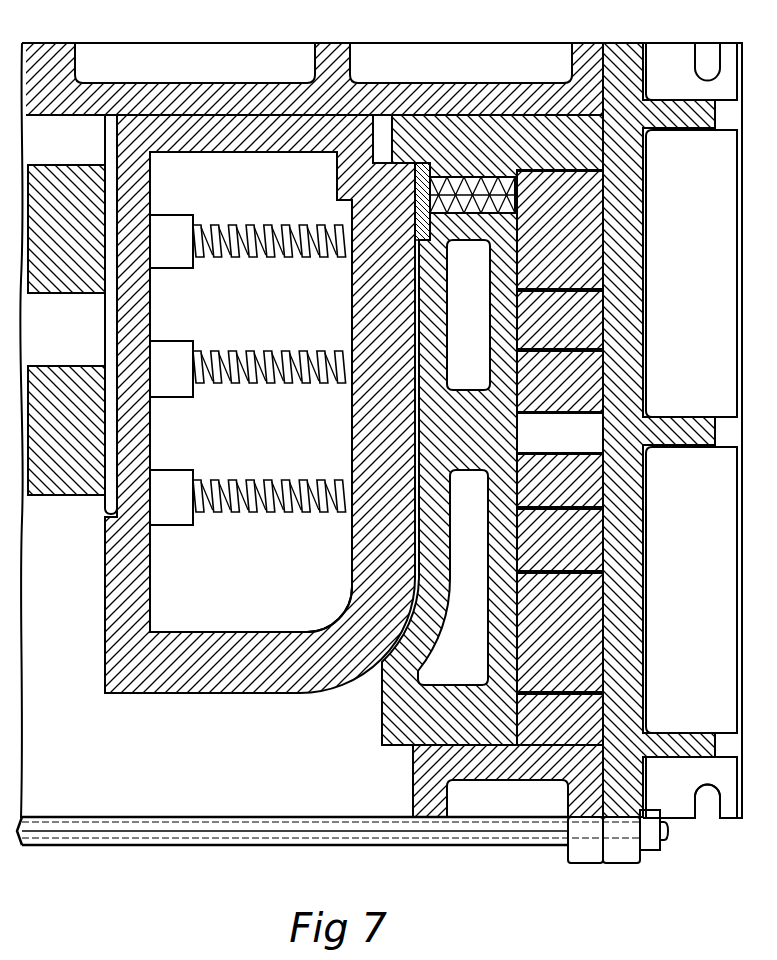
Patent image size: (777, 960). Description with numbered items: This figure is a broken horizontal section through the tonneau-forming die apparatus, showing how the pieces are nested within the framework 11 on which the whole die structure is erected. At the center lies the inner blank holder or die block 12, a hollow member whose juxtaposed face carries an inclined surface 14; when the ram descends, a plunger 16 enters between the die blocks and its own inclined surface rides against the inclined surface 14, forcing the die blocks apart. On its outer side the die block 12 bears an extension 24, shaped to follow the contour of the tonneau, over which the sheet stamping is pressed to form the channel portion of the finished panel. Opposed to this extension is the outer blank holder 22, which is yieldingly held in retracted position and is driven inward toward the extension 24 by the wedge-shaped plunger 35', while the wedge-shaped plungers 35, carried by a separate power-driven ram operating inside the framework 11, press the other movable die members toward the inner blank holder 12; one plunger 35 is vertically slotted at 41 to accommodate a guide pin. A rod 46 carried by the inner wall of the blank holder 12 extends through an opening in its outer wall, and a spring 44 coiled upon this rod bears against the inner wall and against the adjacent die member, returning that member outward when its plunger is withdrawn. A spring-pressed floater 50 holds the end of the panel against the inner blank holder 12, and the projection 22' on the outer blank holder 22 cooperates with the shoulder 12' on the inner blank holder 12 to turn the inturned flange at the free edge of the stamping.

The framework 11 is at (410, 100).
The die block 12 is at (260, 433).
The shoulder 12' is at (354, 153).
The inclined surface 14 is at (110, 435).
The plunger 16 is at (67, 192).
The outer blank holder 22 is at (467, 466).
The projection 22' is at (334, 84).
The extension 24 is at (400, 540).
The wedge-shaped plunger 35 is at (605, 458).
The wedge-shaped plunger 35' is at (610, 424).
The vertical slot 41 is at (583, 435).
The spring 44 is at (253, 480).
The rod 46 is at (227, 480).
The floater 50 is at (423, 175).